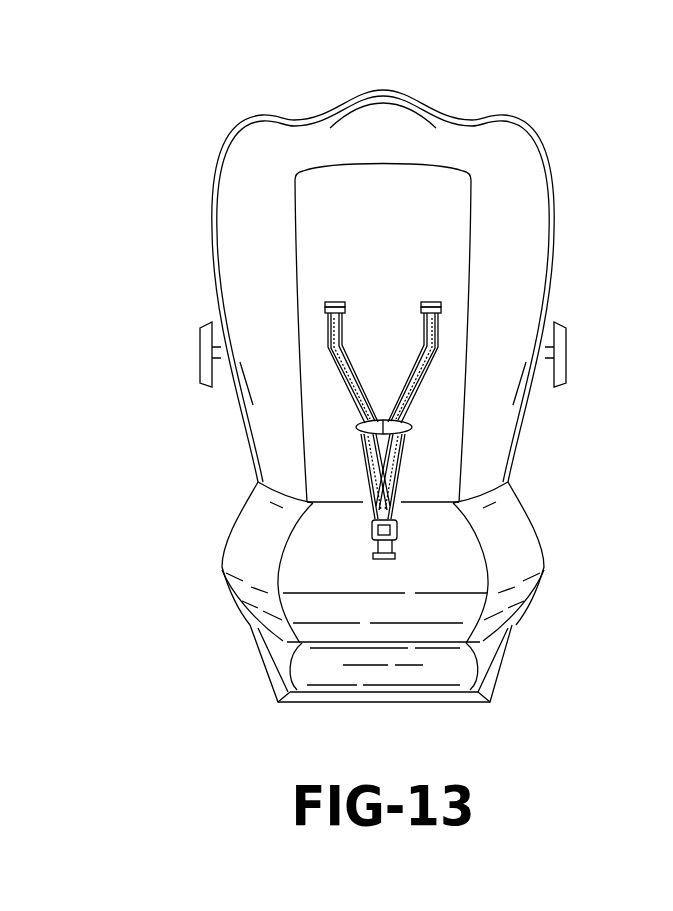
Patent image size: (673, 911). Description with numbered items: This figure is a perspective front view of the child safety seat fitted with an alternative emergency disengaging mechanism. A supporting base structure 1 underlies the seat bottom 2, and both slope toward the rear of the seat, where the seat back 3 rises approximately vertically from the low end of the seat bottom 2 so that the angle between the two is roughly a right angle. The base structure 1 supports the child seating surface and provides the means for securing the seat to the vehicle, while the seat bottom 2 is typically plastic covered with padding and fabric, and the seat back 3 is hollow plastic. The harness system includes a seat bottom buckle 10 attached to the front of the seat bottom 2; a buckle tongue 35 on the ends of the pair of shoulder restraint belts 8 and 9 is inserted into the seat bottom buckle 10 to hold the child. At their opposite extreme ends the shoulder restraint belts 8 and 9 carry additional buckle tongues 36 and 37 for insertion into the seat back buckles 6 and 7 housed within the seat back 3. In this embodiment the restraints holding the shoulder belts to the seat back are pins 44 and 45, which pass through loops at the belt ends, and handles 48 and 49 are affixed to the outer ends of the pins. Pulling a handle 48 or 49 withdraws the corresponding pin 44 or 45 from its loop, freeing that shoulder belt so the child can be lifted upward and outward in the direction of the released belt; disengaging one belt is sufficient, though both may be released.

The supporting base structure 1 is at (502, 663).
The seat bottom 2 is at (322, 557).
The seat back 3 is at (381, 352).
The seat back buckle 6 is at (327, 307).
The seat back buckle 7 is at (441, 307).
The shoulder restraint belt 8 is at (417, 392).
The shoulder restraint belt 9 is at (357, 390).
The seat bottom buckle 10 is at (380, 556).
The buckle tongue 35 is at (396, 532).
The buckle tongue 36 is at (437, 302).
The buckle tongue 37 is at (335, 302).
The pin 44 is at (217, 358).
The pin 45 is at (549, 358).
The handle 48 is at (205, 352).
The handle 49 is at (562, 352).